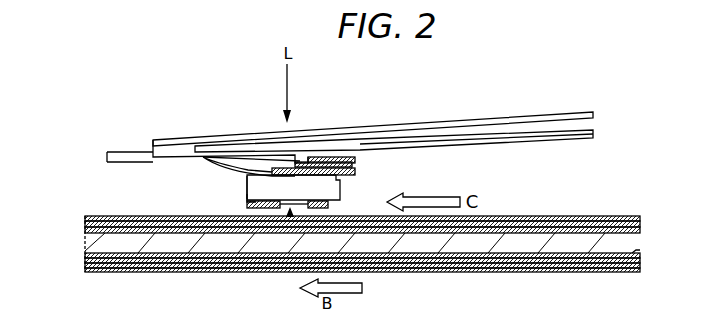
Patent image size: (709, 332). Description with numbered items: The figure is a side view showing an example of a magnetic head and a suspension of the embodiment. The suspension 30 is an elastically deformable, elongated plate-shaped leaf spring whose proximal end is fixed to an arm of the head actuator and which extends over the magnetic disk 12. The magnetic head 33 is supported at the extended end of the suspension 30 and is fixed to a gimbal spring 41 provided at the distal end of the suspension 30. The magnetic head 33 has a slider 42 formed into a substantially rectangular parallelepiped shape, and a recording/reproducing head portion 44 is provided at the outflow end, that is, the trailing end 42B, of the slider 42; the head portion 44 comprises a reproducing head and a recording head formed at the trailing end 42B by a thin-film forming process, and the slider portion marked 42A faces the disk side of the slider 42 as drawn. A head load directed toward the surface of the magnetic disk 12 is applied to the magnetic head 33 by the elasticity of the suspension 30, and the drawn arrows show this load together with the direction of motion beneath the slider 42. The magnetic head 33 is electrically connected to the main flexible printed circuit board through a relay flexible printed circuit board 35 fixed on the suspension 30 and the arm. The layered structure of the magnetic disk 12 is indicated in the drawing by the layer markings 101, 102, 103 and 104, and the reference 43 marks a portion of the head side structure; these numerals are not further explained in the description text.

The magnetic disk 12 is at (610, 190).
The suspension 30 is at (495, 119).
The magnetic head 33 is at (362, 186).
The relay flexible printed circuit board 35 is at (548, 143).
The gimbal spring 41 is at (343, 157).
The slider 42 is at (273, 176).
The spring base portion 42A is at (340, 180).
The trailing end 42B is at (246, 198).
The sliding foot 43 is at (262, 268).
The recording/reproducing head portion 44 is at (247, 183).
The liquid crystal layer 101 is at (555, 258).
The glass substrate 102 is at (648, 233).
The polarizing plate 103 is at (583, 216).
The protective film 104 is at (630, 214).